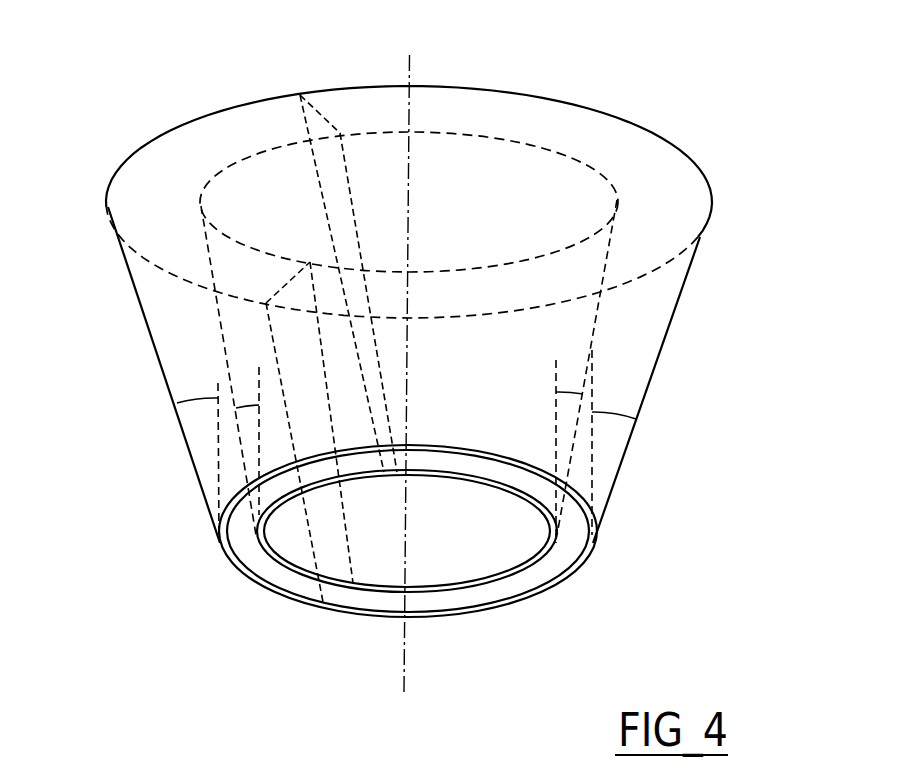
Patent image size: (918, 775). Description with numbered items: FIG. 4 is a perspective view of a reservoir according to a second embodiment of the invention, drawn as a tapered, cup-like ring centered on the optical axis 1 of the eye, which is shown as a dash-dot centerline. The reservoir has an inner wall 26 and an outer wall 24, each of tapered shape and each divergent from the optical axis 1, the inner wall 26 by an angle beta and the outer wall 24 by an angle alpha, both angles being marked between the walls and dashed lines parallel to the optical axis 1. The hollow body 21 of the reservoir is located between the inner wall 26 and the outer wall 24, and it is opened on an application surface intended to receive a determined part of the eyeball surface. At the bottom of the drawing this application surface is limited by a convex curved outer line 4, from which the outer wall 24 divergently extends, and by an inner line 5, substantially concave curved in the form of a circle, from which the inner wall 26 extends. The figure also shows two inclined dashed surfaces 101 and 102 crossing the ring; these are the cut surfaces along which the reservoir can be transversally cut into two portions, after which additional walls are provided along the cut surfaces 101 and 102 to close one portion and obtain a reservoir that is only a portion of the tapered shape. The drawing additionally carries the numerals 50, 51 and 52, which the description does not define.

The optical axis 1 is at (405, 662).
The convex curved outer line 4 is at (246, 571).
The inner line 5 is at (324, 482).
The hollow body 21 is at (648, 314).
The outer wall 24 is at (663, 358).
The inner wall 26 is at (568, 462).
The conical ring body 50 is at (706, 330).
The bottom annular face 51 is at (512, 583).
The top annular face 52 is at (667, 187).
The cut surface 101 is at (320, 127).
The cut surface 102 is at (293, 293).